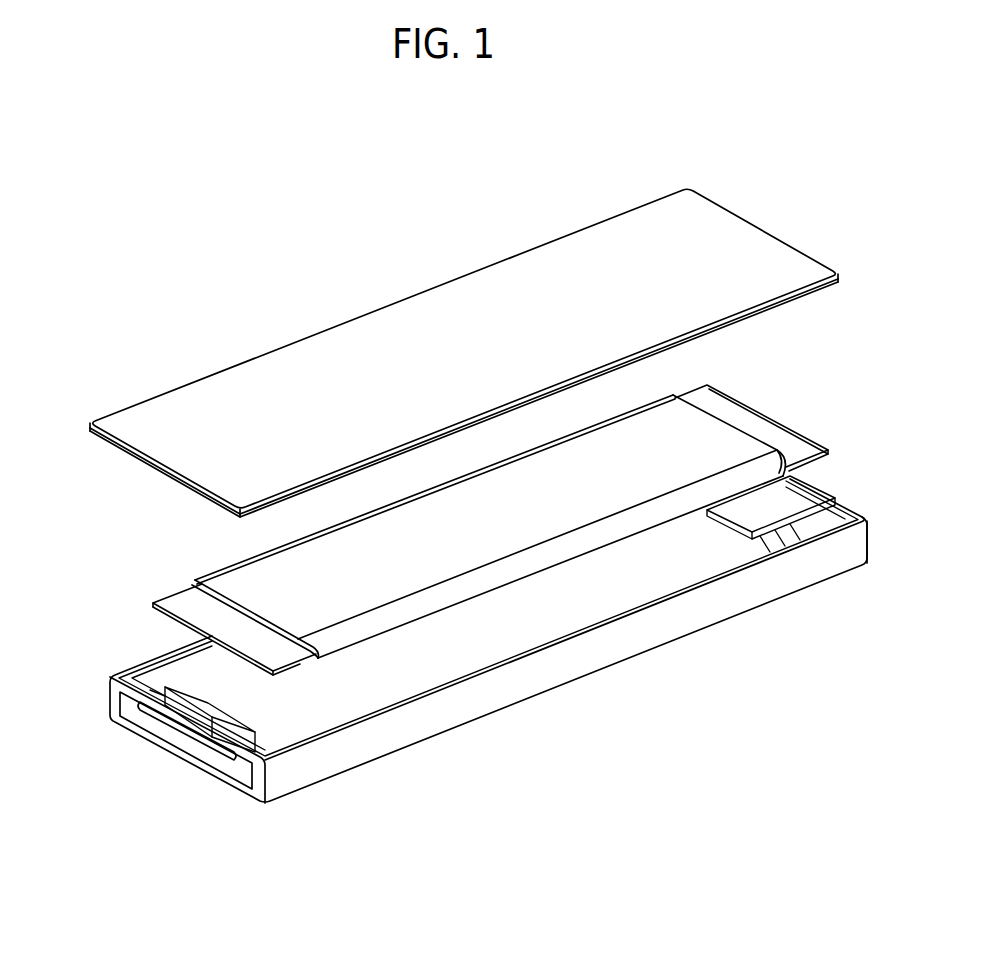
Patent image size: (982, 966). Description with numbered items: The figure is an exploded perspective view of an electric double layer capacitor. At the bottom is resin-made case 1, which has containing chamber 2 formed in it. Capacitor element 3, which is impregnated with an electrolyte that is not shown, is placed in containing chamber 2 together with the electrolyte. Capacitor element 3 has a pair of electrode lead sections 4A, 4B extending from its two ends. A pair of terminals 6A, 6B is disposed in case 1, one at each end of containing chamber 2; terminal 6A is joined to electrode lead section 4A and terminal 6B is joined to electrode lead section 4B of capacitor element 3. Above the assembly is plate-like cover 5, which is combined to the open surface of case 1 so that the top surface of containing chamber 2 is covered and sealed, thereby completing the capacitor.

The case 1 is at (590, 668).
The containing chamber 2 is at (397, 695).
The capacitor element 3 is at (252, 575).
The electrode lead section 4A is at (205, 617).
The electrode lead section 4B is at (748, 422).
The cover 5 is at (222, 392).
The terminal 6A is at (212, 717).
The terminal 6B is at (767, 515).